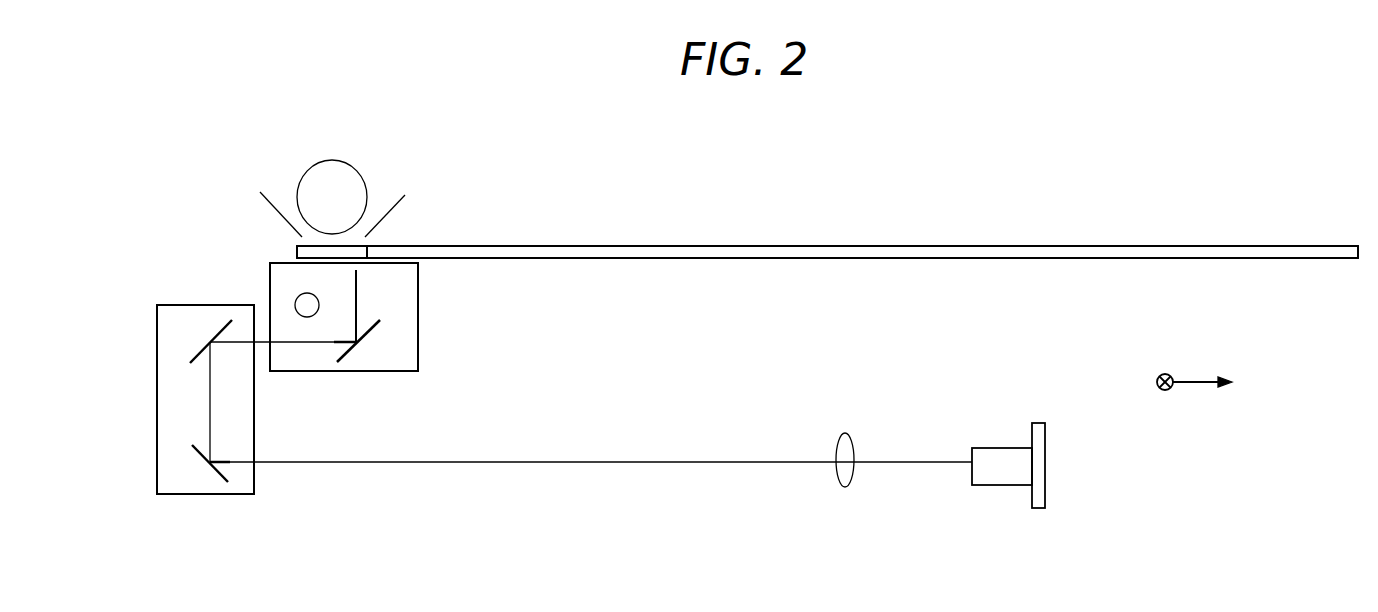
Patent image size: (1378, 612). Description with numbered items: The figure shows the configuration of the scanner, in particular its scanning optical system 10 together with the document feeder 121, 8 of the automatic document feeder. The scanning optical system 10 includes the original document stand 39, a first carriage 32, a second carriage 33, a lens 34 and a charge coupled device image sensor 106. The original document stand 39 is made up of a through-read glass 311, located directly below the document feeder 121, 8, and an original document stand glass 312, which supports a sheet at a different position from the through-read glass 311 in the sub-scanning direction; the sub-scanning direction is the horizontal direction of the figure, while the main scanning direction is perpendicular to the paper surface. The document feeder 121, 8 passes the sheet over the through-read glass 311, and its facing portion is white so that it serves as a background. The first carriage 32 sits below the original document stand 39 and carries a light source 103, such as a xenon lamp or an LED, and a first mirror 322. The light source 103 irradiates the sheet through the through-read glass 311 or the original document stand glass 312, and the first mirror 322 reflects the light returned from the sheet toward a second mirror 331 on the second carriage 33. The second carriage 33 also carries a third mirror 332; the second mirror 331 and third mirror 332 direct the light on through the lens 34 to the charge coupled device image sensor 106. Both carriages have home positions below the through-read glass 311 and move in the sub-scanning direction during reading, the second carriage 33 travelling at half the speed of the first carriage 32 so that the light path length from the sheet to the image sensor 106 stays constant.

The scanning optical system 10 is at (1092, 222).
The document feeder 121 is at (332, 172).
The original document 8 is at (315, 165).
The original document stand 39 is at (806, 246).
The through-read glass 311 is at (297, 248).
The original document stand glass 312 is at (732, 246).
The first carriage 32 is at (418, 316).
The light source 103 is at (295, 301).
The first mirror 322 is at (356, 345).
The second carriage 33 is at (172, 304).
The second mirror 331 is at (200, 347).
The third mirror 332 is at (203, 455).
The lens 34 is at (847, 432).
The charge coupled device image sensor (CCD) 106 is at (1000, 486).